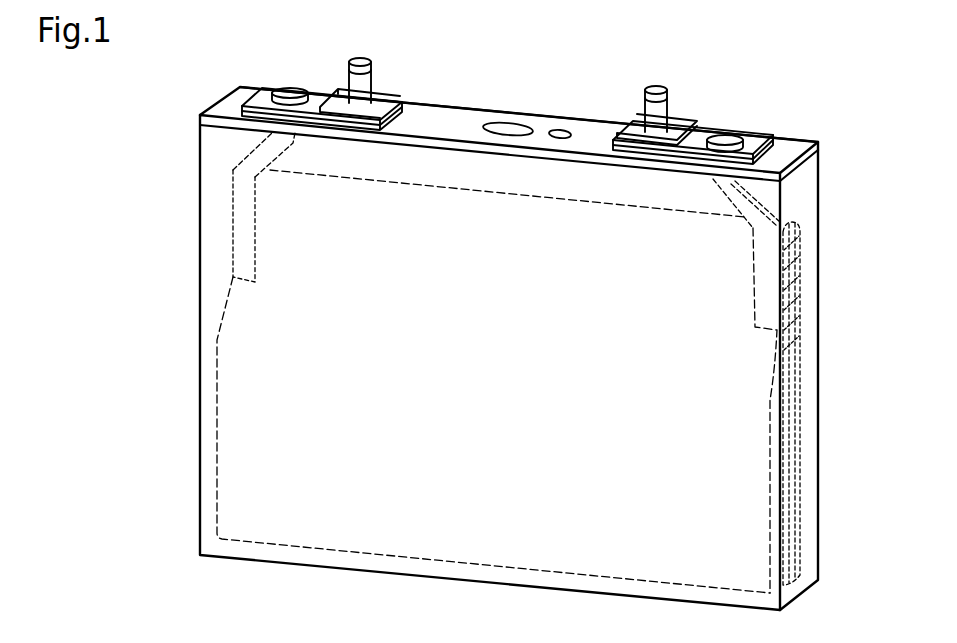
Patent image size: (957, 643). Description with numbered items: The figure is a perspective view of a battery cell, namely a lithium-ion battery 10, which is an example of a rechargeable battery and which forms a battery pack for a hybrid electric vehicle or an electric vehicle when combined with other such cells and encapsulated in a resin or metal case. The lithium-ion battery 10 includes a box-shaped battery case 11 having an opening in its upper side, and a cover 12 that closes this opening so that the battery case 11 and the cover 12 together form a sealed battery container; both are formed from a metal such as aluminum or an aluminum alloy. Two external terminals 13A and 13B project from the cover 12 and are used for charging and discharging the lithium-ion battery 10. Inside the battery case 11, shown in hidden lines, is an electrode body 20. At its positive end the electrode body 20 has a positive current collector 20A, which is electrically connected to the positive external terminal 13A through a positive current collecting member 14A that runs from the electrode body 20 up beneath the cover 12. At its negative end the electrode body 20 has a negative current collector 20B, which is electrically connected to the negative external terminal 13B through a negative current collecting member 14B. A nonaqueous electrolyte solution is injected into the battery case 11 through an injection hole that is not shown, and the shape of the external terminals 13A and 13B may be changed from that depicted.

The lithium-ion battery 10 is at (203, 87).
The battery case 11 is at (820, 265).
The cover 12 is at (821, 143).
The positive external terminal 13A is at (366, 60).
The negative external terminal 13B is at (660, 88).
The positive current collecting member 14A is at (247, 155).
The negative current collecting member 14B is at (770, 203).
The electrode body 20 is at (215, 414).
The positive current collector 20A is at (232, 213).
The negative current collector 20B is at (797, 297).